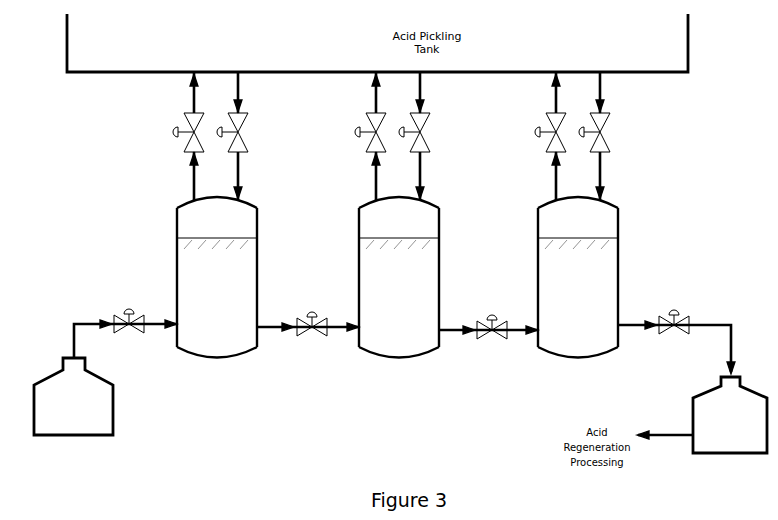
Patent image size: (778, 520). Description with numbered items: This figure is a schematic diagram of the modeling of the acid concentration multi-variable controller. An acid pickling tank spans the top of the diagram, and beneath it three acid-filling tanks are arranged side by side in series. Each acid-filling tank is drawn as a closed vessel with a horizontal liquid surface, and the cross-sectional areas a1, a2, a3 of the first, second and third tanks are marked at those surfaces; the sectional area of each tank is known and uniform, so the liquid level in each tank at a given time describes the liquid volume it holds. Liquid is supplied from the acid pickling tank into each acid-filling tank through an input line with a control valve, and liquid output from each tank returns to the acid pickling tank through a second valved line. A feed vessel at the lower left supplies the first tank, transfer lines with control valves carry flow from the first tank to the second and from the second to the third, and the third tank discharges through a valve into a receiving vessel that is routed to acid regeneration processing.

The sectional area of the first acid-filling tank a1 is at (217, 237).
The sectional area of the second acid-filling tank a2 is at (399, 237).
The sectional area of the third acid-filling tank a3 is at (578, 237).